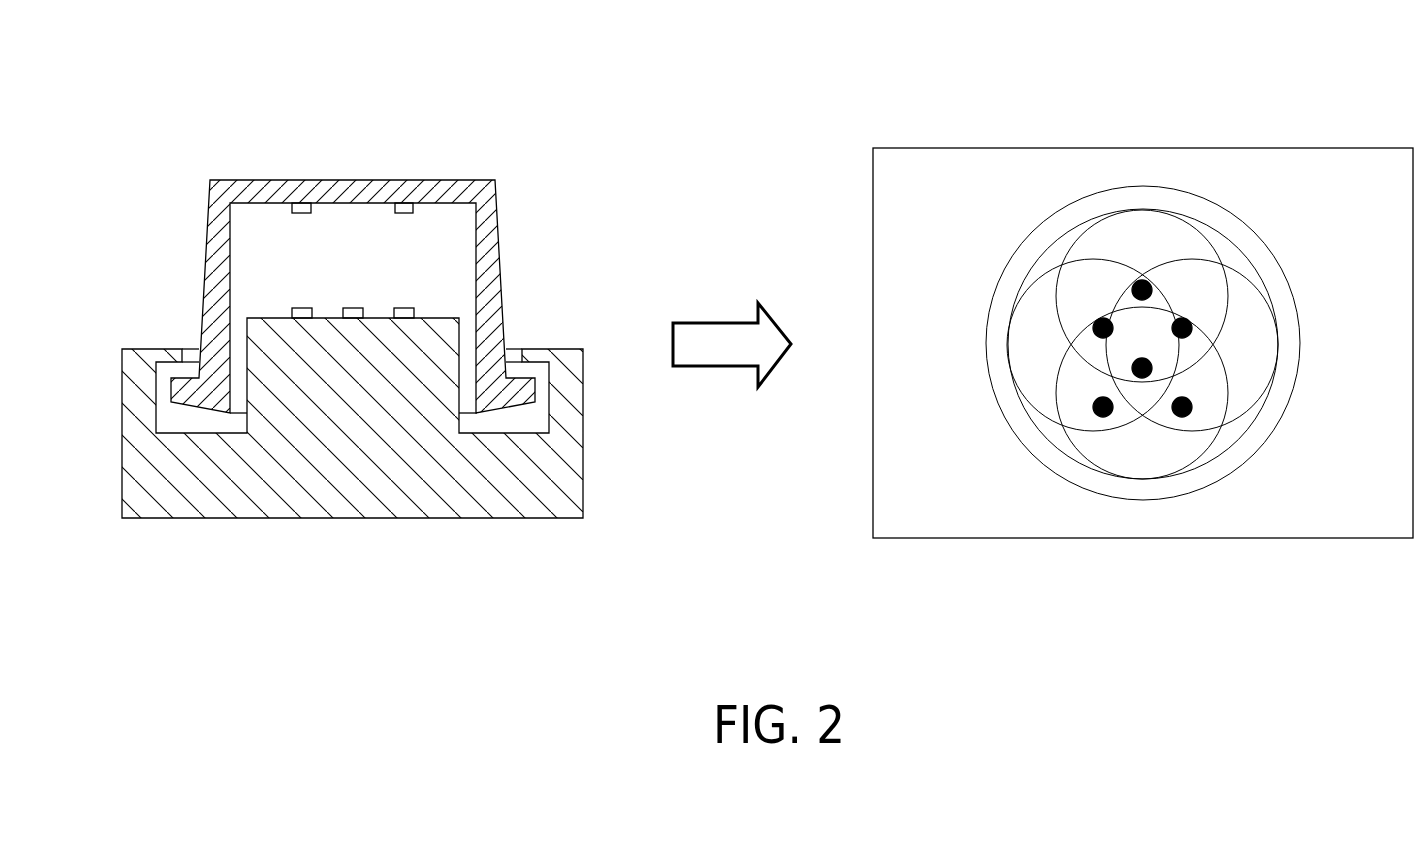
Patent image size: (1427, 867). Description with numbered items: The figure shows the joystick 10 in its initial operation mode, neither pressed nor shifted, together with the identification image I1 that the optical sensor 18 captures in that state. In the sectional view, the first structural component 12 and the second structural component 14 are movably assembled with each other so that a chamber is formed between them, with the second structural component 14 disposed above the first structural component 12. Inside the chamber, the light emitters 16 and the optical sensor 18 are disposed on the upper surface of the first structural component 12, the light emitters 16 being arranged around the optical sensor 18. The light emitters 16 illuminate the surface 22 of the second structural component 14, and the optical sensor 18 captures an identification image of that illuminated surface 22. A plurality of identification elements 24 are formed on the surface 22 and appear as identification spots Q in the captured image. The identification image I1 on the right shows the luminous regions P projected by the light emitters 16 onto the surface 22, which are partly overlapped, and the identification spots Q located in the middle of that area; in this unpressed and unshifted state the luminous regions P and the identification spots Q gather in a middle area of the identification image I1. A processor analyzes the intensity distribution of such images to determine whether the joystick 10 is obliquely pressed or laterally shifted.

The joystick 10 is at (520, 100).
The first structural component 12 is at (545, 487).
The second structural component 14 is at (487, 248).
The light emitter 16 is at (301, 320).
The optical sensor 18 is at (352, 320).
The surface 22 is at (265, 207).
The identification element 24 is at (302, 206).
The luminous region P is at (1033, 317).
The identification spot Q is at (1143, 278).
The identification image I1 is at (1143, 372).